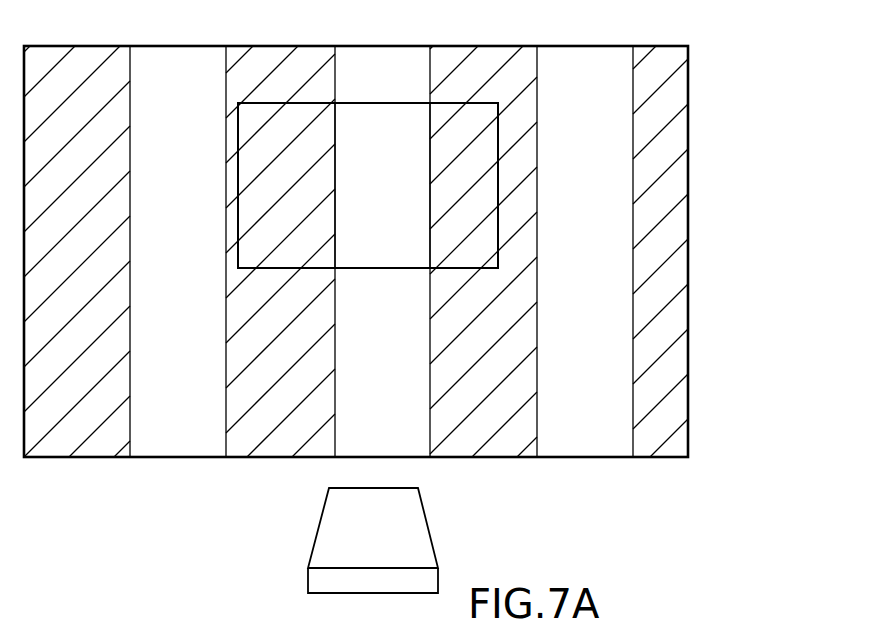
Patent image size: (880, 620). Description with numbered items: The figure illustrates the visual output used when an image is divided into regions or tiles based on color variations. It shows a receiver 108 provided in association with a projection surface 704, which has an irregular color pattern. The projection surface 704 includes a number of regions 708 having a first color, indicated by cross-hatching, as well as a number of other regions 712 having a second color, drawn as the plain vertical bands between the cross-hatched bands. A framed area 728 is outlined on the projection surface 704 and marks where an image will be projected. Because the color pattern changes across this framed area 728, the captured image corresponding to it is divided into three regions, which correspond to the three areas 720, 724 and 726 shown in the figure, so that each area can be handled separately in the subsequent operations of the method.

The projection surface 704 is at (592, 46).
The regions having a first color 708 is at (527, 157).
The regions having a second color 712 is at (408, 342).
The area 720 is at (261, 118).
The area 724 is at (400, 127).
The area 726 is at (480, 118).
The framed area 728 is at (238, 137).
The receiver 108 is at (432, 528).